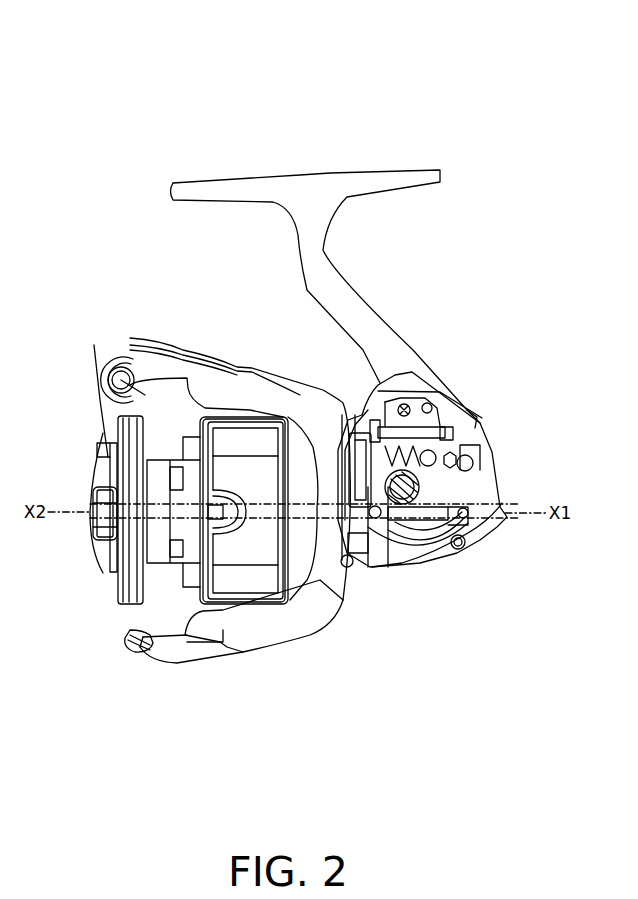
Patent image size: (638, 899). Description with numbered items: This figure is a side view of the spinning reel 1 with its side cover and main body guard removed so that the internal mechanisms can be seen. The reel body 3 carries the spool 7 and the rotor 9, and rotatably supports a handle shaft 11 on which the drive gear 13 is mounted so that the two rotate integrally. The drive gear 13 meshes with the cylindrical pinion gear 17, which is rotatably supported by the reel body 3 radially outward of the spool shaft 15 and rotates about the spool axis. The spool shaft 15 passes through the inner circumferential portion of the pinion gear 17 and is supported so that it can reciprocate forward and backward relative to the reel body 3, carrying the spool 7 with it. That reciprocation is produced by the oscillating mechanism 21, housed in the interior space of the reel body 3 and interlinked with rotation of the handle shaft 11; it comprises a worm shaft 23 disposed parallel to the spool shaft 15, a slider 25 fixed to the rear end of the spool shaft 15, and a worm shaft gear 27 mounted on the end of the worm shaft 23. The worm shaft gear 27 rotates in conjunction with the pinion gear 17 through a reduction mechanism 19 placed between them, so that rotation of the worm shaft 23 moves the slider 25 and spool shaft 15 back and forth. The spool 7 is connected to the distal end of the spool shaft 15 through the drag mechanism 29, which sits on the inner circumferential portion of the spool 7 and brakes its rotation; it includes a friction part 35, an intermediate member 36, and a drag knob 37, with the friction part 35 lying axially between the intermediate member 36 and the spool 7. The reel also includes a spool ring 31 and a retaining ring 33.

The spinning reel 1 is at (436, 106).
The reel body 3 is at (350, 274).
The spool 7 is at (184, 417).
The rotor 9 is at (160, 665).
The handle shaft 11 is at (447, 512).
The drive gear 13 is at (397, 550).
The spool shaft 15 is at (430, 540).
The pinion gear 17 is at (345, 560).
The reduction mechanism 19 is at (367, 560).
The oscillating mechanism 21 is at (500, 282).
The worm shaft 23 is at (441, 400).
The slider 25 is at (483, 405).
The worm shaft gear 27 is at (392, 385).
The drag mechanism 29 is at (155, 286).
The spool ring 31 is at (125, 575).
The retaining ring 33 is at (120, 568).
The friction part 35 is at (172, 438).
The intermediate member 36 is at (127, 345).
The drag knob 37 is at (94, 345).